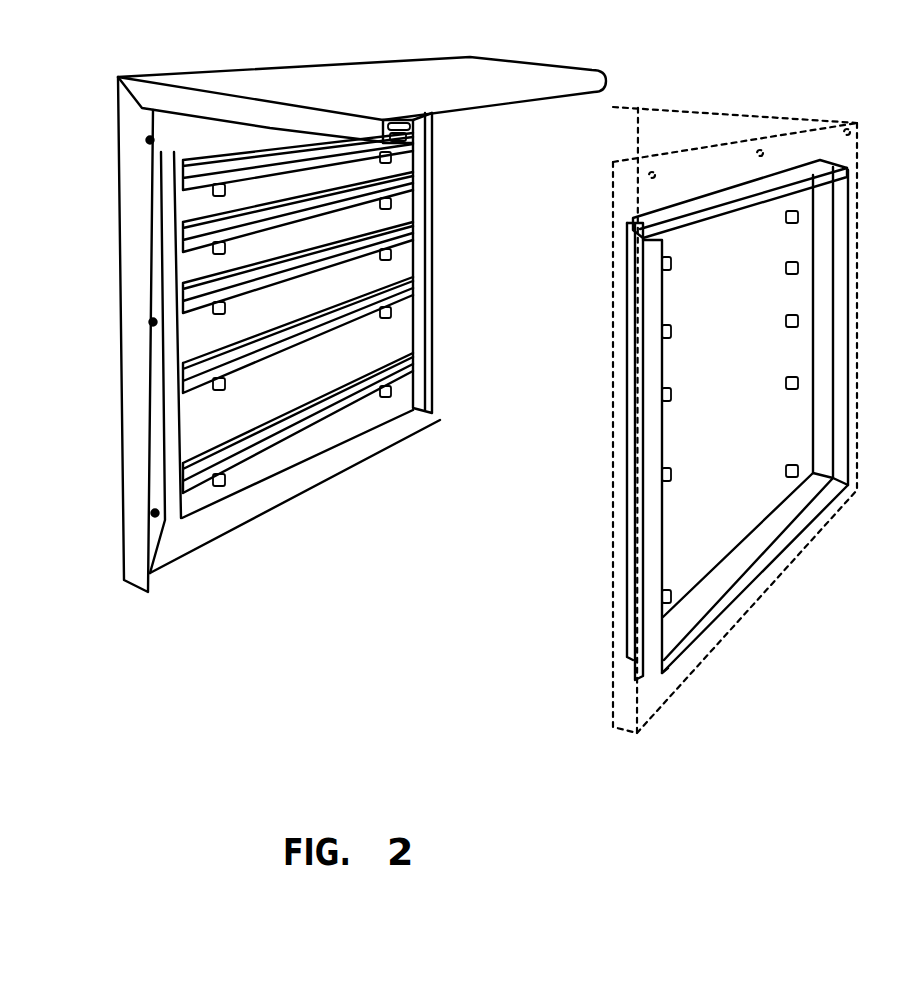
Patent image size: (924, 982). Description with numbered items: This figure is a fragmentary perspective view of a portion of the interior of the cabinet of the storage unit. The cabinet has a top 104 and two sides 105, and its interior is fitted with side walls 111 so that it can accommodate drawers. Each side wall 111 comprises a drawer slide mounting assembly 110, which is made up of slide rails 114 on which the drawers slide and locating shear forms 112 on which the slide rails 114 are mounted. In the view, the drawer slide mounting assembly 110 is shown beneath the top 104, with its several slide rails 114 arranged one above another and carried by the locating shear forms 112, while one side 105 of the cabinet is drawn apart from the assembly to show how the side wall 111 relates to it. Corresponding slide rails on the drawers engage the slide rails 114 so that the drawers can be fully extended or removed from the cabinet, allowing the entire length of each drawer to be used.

The top 104 is at (378, 98).
The side 105 is at (772, 370).
The drawer slide mounting assembly 110 is at (207, 423).
The side wall 111 is at (717, 370).
The locating shear form 112 is at (383, 317).
The slide rail 114 is at (205, 243).